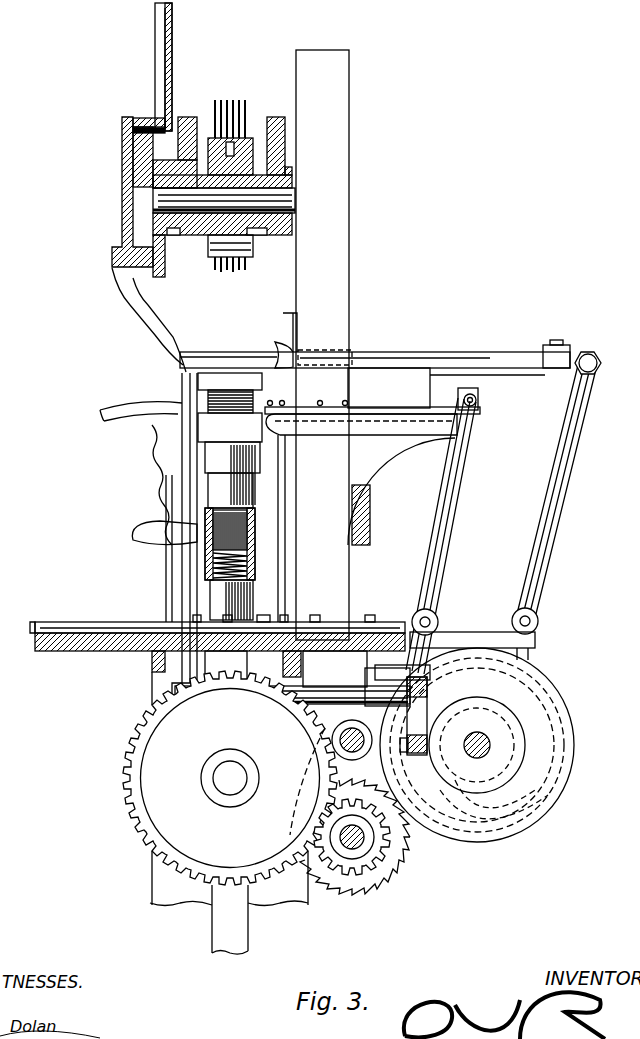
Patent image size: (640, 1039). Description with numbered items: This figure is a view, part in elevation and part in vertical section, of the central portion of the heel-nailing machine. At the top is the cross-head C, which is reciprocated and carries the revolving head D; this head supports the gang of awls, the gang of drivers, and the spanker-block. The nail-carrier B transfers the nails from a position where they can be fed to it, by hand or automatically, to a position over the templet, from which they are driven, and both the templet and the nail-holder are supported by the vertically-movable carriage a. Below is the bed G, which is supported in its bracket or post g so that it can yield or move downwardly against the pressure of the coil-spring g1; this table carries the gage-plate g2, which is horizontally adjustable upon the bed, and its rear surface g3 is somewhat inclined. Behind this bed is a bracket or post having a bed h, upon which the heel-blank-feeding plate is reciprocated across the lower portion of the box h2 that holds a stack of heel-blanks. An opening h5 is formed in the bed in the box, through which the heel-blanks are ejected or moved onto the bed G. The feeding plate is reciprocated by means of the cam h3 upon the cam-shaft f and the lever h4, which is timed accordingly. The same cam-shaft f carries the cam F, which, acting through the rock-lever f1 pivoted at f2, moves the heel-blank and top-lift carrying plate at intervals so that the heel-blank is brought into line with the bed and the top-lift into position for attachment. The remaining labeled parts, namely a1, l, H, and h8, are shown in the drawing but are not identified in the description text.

The carriage a is at (236, 274).
The upper pins a1 is at (230, 102).
The cross-head C is at (274, 117).
The revolving head D is at (206, 246).
The box h2 is at (322, 345).
The curved pipe l is at (106, 326).
The nail-carrier B is at (358, 352).
The bed h is at (374, 425).
The opening h5 is at (290, 405).
The frame H is at (310, 502).
The lever h4 is at (455, 516).
The rock-lever f1 is at (183, 577).
The bed G is at (230, 440).
The coil-spring g1 is at (218, 578).
The gage-plate g2 is at (200, 417).
The rear surface g3 is at (255, 432).
The bracket or post g is at (205, 523).
The cam-shaft f is at (264, 708).
The pivot f2 is at (215, 705).
The cam h3 is at (558, 746).
The wheel rim h8 is at (552, 716).
The cam F is at (490, 733).